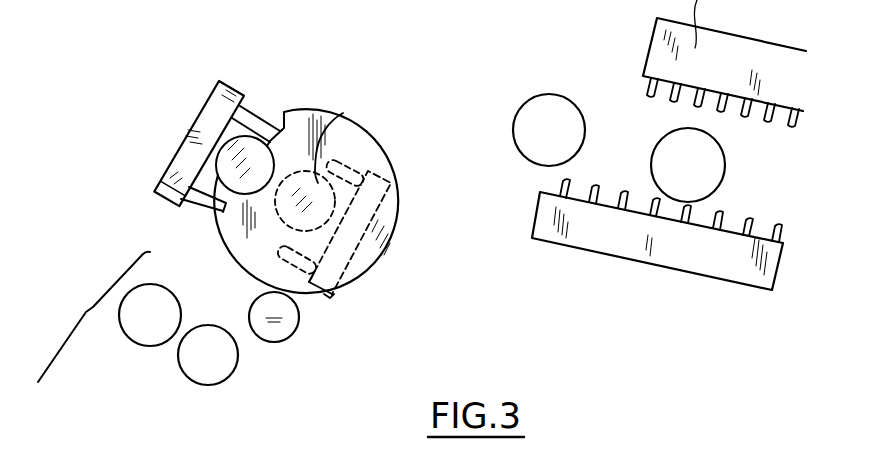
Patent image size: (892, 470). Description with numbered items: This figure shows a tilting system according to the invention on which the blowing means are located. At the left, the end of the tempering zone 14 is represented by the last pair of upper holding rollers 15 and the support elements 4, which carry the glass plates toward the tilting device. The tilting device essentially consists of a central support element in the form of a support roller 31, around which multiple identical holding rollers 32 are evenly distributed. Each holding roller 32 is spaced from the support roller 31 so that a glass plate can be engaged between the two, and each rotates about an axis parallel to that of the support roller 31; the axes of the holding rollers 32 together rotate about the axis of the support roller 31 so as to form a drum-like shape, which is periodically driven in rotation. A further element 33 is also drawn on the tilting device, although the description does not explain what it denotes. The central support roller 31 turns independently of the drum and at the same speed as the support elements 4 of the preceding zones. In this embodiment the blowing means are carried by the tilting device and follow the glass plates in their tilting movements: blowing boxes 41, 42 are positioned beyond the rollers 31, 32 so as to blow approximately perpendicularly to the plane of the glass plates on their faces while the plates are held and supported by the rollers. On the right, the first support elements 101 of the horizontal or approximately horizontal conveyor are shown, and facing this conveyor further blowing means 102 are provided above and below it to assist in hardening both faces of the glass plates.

The support roller 31 is at (372, 140).
The holding rollers 32 is at (272, 150).
The channel 33 is at (343, 113).
The blowing box 41 is at (208, 120).
The blowing box 42 is at (380, 197).
The tempering zone 14 is at (94, 317).
The upper holding rollers 15 is at (143, 327).
The support elements 4 is at (224, 367).
The first support elements 101 is at (553, 117).
The blowing means 102 is at (645, 245).